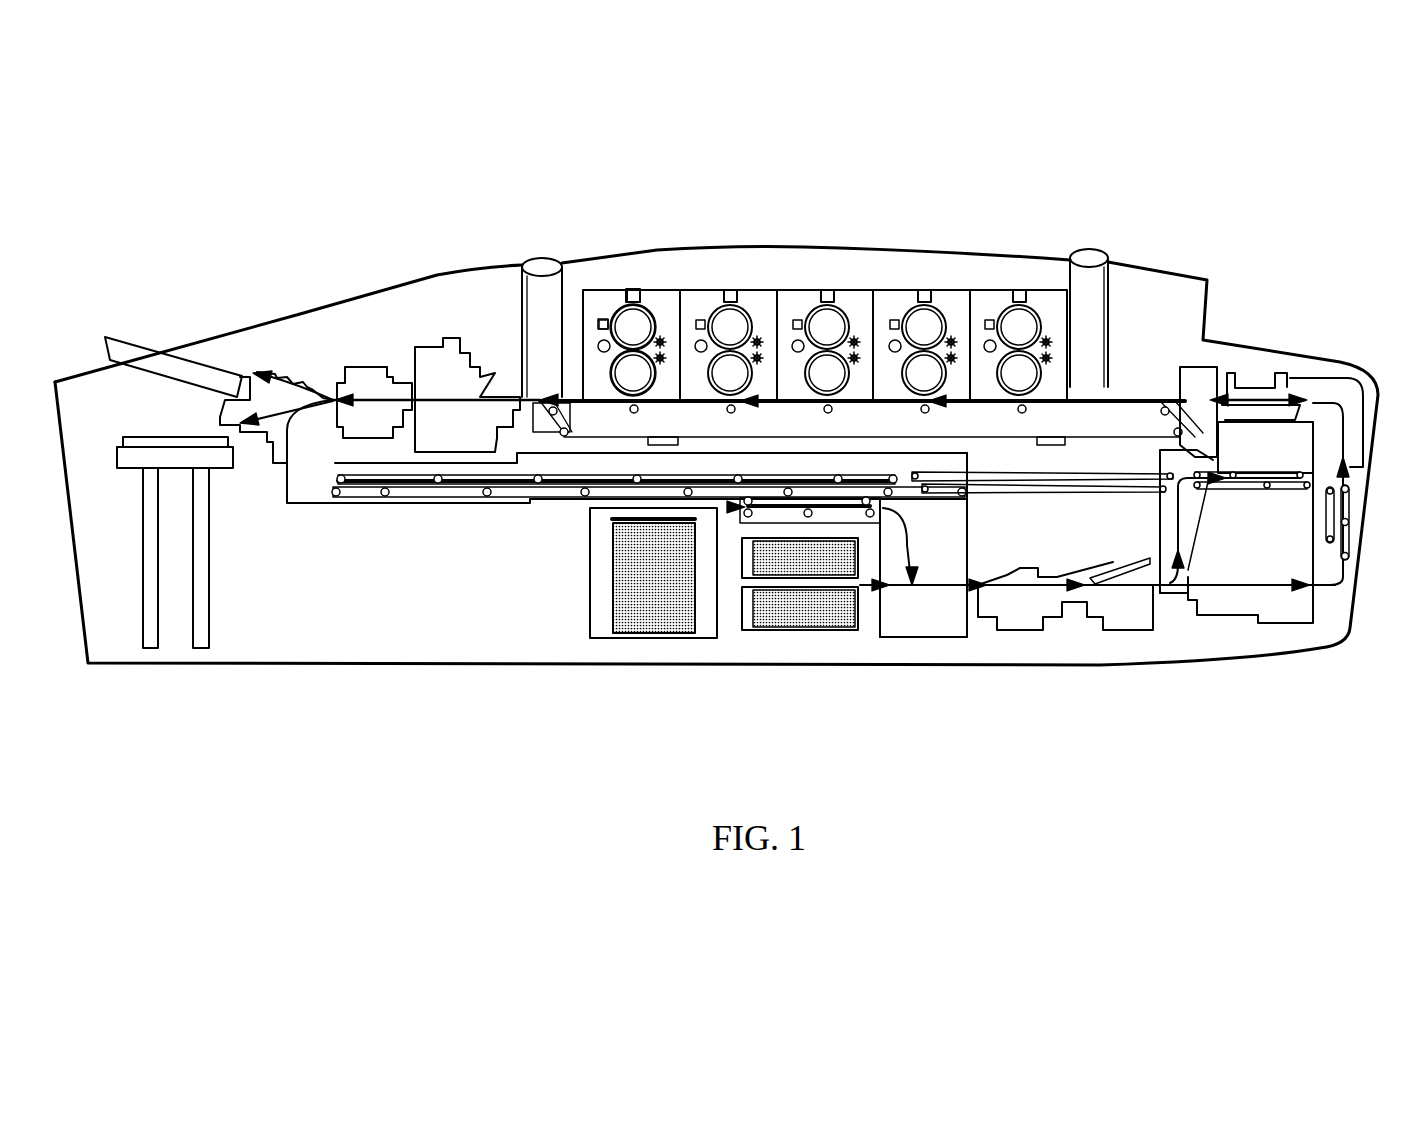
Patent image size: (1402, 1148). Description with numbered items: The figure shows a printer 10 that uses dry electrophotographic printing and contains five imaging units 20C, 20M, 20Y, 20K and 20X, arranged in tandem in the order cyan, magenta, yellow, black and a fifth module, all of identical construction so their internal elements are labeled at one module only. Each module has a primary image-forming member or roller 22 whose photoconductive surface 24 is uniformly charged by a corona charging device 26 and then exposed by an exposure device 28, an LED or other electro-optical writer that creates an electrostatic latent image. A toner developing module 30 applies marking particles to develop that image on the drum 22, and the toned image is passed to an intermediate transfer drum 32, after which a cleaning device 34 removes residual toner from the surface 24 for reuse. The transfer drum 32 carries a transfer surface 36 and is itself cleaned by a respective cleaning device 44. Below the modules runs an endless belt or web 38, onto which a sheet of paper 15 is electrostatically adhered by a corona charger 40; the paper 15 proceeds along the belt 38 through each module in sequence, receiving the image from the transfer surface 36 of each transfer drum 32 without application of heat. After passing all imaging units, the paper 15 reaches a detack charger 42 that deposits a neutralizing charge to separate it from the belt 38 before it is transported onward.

The printer 10 is at (749, 176).
The paper 15 is at (610, 520).
The imaging unit (cyan) 20C is at (617, 274).
The imaging unit (magenta) 20M is at (769, 274).
The imaging unit (yellow) 20Y is at (840, 274).
The imaging unit (black) 20K is at (933, 274).
The imaging unit (fifth module) 20X is at (1017, 274).
The primary image-forming member 22 is at (622, 336).
The photoconductive surface 24 is at (650, 312).
The corona charging device 26 is at (598, 318).
The exposure device 28 is at (634, 300).
The toner developing module 30 is at (598, 340).
The transfer drum 32 is at (622, 383).
The cleaning device 34 is at (662, 337).
The transfer surface 36 is at (648, 384).
The endless belt or web 38 is at (313, 488).
The corona charger 40 is at (1207, 365).
The detack charger 42 is at (373, 365).
The cleaning device (transfer drum) 44 is at (662, 363).